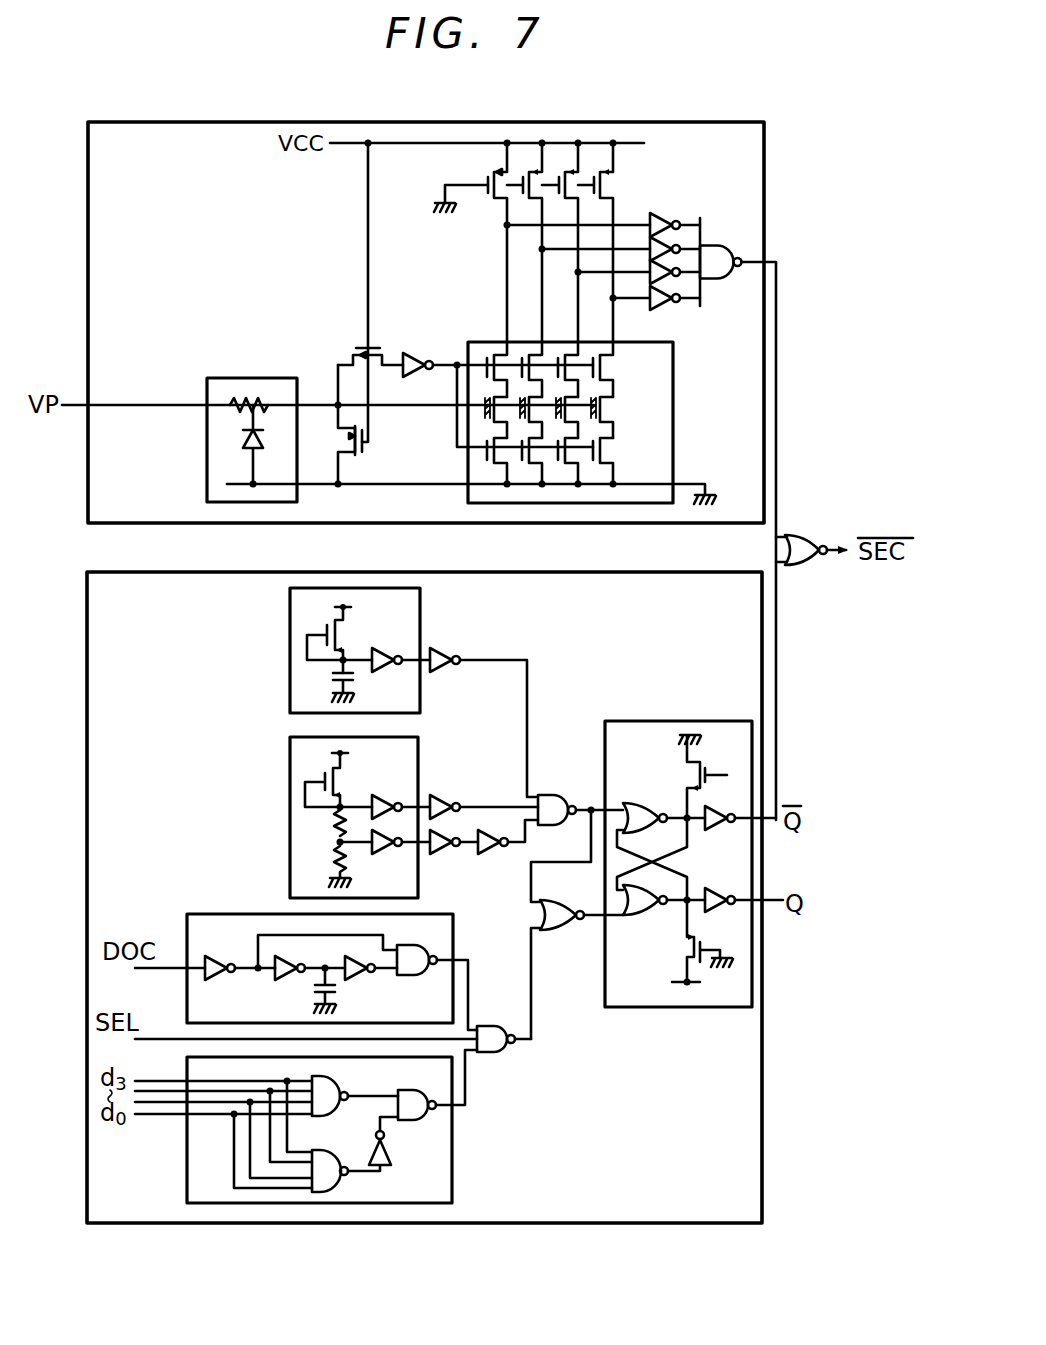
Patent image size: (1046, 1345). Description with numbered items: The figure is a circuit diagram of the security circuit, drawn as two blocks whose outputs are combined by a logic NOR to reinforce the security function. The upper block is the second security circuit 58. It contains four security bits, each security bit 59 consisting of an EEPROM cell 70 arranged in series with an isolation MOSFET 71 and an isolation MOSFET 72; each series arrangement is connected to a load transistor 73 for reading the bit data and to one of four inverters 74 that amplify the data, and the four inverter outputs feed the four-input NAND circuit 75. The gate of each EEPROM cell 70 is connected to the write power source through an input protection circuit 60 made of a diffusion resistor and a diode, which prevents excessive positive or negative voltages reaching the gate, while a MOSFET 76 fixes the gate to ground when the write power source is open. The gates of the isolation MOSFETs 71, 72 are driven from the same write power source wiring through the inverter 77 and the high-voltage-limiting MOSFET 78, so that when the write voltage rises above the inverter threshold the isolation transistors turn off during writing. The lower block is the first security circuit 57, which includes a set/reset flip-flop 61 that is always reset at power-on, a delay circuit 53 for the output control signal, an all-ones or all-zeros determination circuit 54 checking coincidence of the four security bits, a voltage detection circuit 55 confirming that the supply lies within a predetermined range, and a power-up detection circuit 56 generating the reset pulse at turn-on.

The delay circuit 53 is at (232, 914).
The determination circuit 54 is at (452, 1152).
The voltage detection circuit 55 is at (288, 806).
The power-up detection circuit 56 is at (288, 660).
The security circuit 57 is at (763, 1107).
The security circuit 58 is at (765, 183).
The security bit 59 is at (673, 400).
The protection circuit 60 is at (242, 378).
The flip-flop 61 is at (634, 721).
The EEPROM cell 70 is at (607, 411).
The isolation MOSFET 71 is at (607, 368).
The isolation MOSFET 72 is at (607, 450).
The load transistor 73 is at (616, 190).
The inverter 74 is at (667, 306).
The NAND circuit 75 is at (727, 283).
The MOSFET 76 is at (362, 452).
The inverter 77 is at (412, 356).
The MOSFET 78 is at (352, 347).